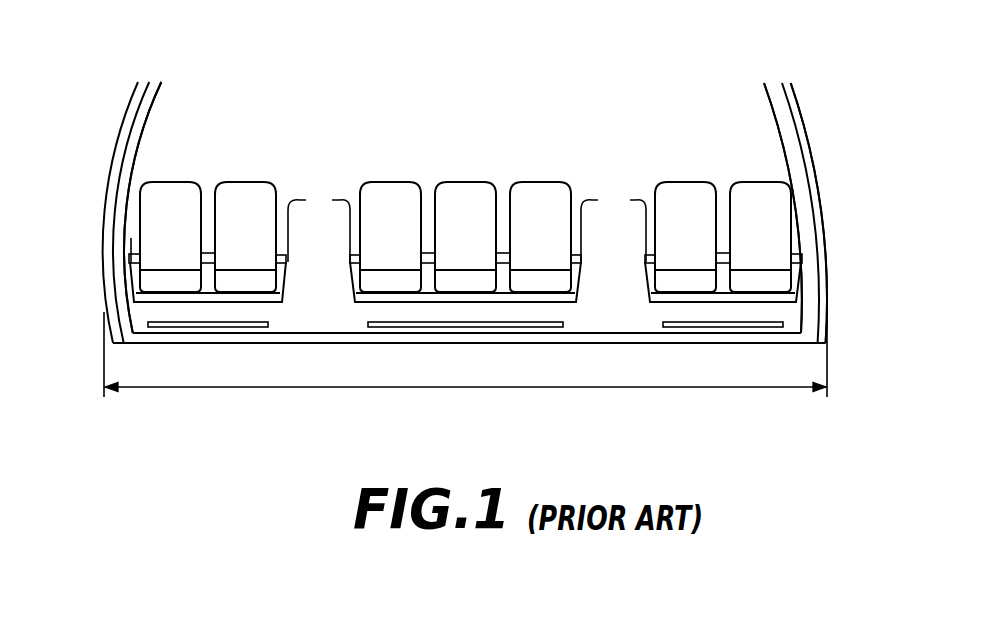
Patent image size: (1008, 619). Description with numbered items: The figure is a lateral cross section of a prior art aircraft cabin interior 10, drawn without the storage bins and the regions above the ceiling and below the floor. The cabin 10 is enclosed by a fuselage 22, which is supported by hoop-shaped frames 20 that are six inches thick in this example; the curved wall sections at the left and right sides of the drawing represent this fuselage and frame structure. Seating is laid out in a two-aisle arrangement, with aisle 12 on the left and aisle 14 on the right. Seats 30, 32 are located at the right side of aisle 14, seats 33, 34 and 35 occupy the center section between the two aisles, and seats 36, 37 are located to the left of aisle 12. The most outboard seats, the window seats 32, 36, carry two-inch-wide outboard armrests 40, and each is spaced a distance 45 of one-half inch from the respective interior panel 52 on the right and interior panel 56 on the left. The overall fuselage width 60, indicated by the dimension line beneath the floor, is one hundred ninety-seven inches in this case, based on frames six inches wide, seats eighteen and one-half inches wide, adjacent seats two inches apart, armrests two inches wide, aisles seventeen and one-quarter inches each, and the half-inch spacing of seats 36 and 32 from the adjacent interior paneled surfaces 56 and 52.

The cabin interior 10 is at (612, 53).
The aisle 12 is at (332, 264).
The aisle 14 is at (630, 264).
The hoop-shaped frame 20 is at (120, 130).
The fuselage 22 is at (834, 239).
The seat 30 is at (698, 237).
The seat 32 is at (773, 237).
The seat 33 is at (403, 237).
The seat 34 is at (478, 237).
The seat 35 is at (553, 237).
The seat 36 is at (183, 237).
The seat 37 is at (258, 237).
The outboard armrest 40 is at (845, 286).
The distance 45 is at (128, 238).
The interior panel 52 is at (797, 172).
The interior panel 56 is at (138, 168).
The fuselage width 60 is at (467, 388).